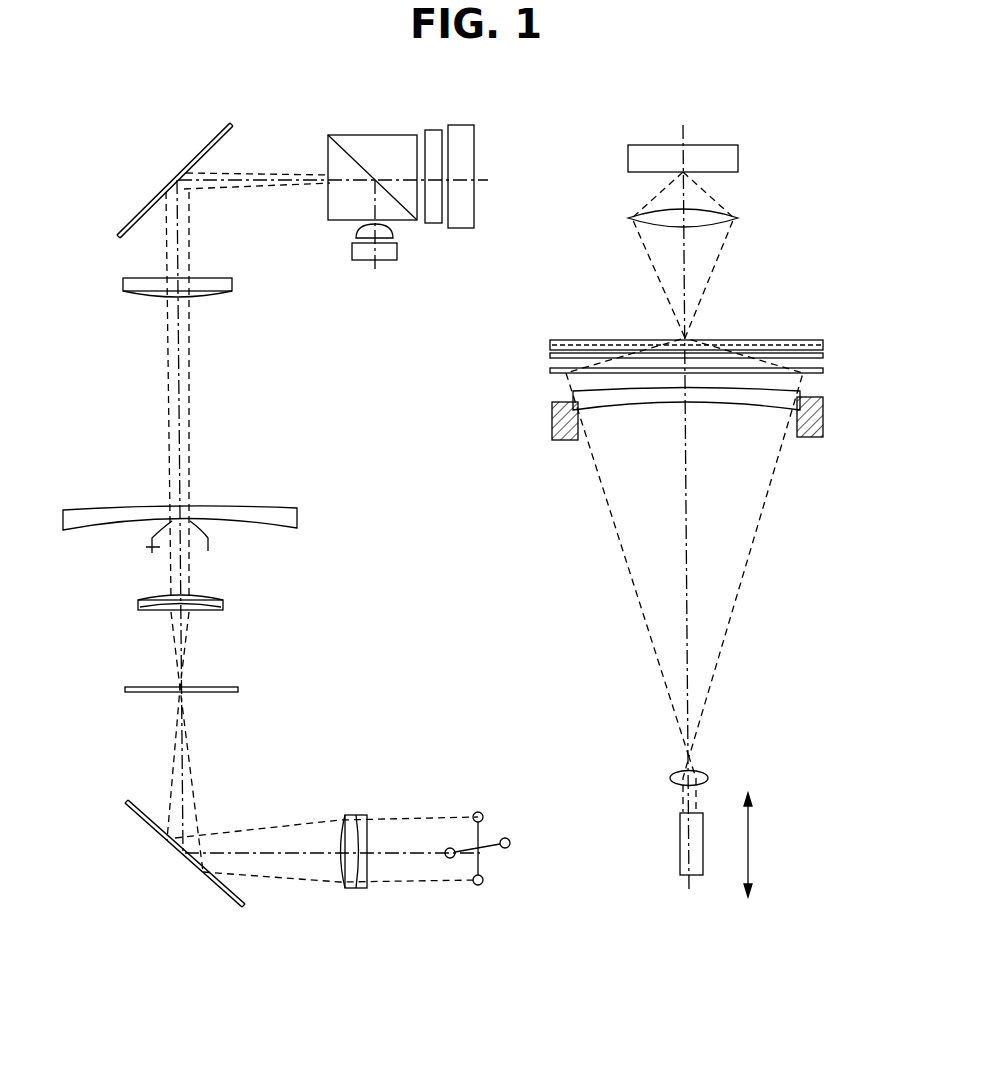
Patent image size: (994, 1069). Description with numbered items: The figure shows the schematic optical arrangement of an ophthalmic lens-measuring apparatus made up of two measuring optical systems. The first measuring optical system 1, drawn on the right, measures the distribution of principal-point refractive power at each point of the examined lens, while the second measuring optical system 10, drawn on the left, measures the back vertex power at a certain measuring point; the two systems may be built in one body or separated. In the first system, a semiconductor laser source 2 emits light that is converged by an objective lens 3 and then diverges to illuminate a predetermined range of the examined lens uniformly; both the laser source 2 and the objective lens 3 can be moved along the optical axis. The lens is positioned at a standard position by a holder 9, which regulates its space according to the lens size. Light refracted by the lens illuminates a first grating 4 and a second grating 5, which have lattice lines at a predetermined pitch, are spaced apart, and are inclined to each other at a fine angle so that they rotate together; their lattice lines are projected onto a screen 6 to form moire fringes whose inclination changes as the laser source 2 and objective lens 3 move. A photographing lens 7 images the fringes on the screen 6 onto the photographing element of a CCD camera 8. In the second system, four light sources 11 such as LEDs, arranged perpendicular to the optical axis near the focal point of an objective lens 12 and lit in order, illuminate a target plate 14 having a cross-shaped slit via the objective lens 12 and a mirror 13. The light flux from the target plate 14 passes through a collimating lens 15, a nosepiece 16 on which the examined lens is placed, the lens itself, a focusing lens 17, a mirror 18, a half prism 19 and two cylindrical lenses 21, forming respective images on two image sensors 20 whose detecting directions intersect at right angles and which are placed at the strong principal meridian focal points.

The first measuring optical system 1 is at (580, 608).
The semiconductor laser source 2 is at (682, 852).
The objective lens 3 is at (675, 780).
The first grating 4 is at (550, 372).
The second grating 5 is at (824, 354).
The screen 6 is at (552, 346).
The photographing lens 7 is at (633, 221).
The CCD camera 8 is at (640, 148).
The holder 9 is at (552, 417).
The second measuring optical system 10 is at (295, 657).
The light sources for measurement 11 is at (477, 805).
The objective lens 12 is at (350, 815).
The mirror 13 is at (143, 825).
The target plate 14 is at (150, 692).
The collimating lens 15 is at (152, 607).
The nosepiece 16 is at (150, 545).
The focusing lens 17 is at (142, 293).
The mirror 18 is at (138, 207).
The half prism 19 is at (348, 138).
The image sensors 20 is at (460, 132).
The cylindrical lenses 21 is at (433, 132).